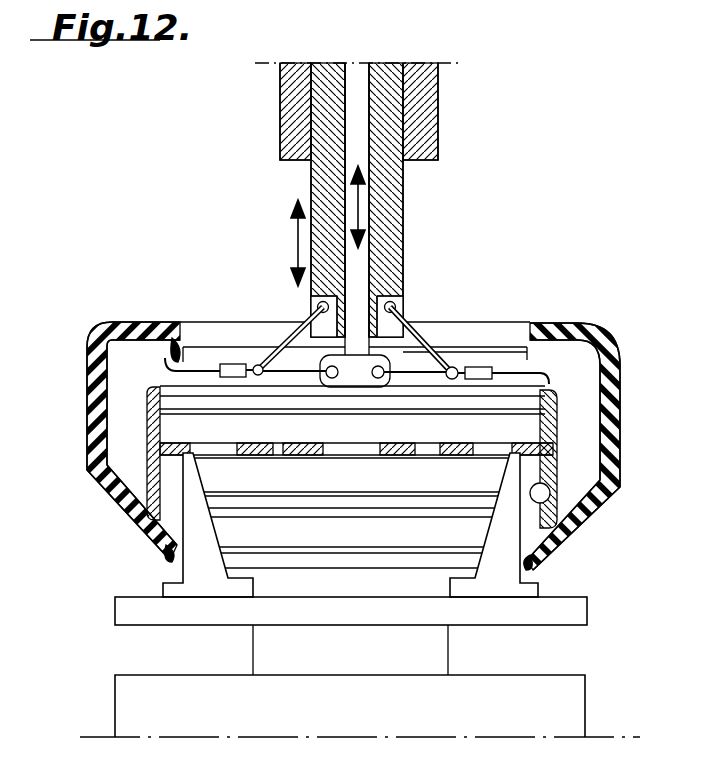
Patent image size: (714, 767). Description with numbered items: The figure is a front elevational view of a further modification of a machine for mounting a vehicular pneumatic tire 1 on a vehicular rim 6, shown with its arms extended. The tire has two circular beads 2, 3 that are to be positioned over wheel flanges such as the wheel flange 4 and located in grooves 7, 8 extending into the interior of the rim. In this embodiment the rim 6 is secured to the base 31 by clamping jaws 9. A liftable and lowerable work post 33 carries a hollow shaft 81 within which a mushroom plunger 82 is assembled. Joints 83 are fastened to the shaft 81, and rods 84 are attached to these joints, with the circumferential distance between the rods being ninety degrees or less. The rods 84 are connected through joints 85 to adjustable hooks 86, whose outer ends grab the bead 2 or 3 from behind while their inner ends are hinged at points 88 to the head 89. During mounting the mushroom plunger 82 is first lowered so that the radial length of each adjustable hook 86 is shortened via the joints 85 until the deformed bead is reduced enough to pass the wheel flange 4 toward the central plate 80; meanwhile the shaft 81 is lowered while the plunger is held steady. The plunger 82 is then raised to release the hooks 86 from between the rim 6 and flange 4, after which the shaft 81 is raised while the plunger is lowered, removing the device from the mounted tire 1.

The vehicular pneumatic tire 1 is at (97, 465).
The circular bead 2 is at (167, 549).
The circular bead 3 is at (177, 338).
The wheel flange 4 is at (532, 389).
The wheel rim 6 is at (553, 447).
The groove 7 is at (542, 411).
The groove 8 is at (549, 481).
The clamping jaws 9 is at (212, 568).
The base 31 is at (133, 607).
The work post 33 is at (428, 98).
The central plate 80 is at (307, 455).
The hollow shaft 81 is at (388, 228).
The mushroom plunger 82 is at (352, 160).
The joints 83 is at (317, 307).
The rods 84 is at (428, 342).
The joints 85 is at (456, 368).
The adjustable hooks 86 is at (206, 374).
The hinge points 88 is at (329, 380).
The head 89 is at (352, 388).